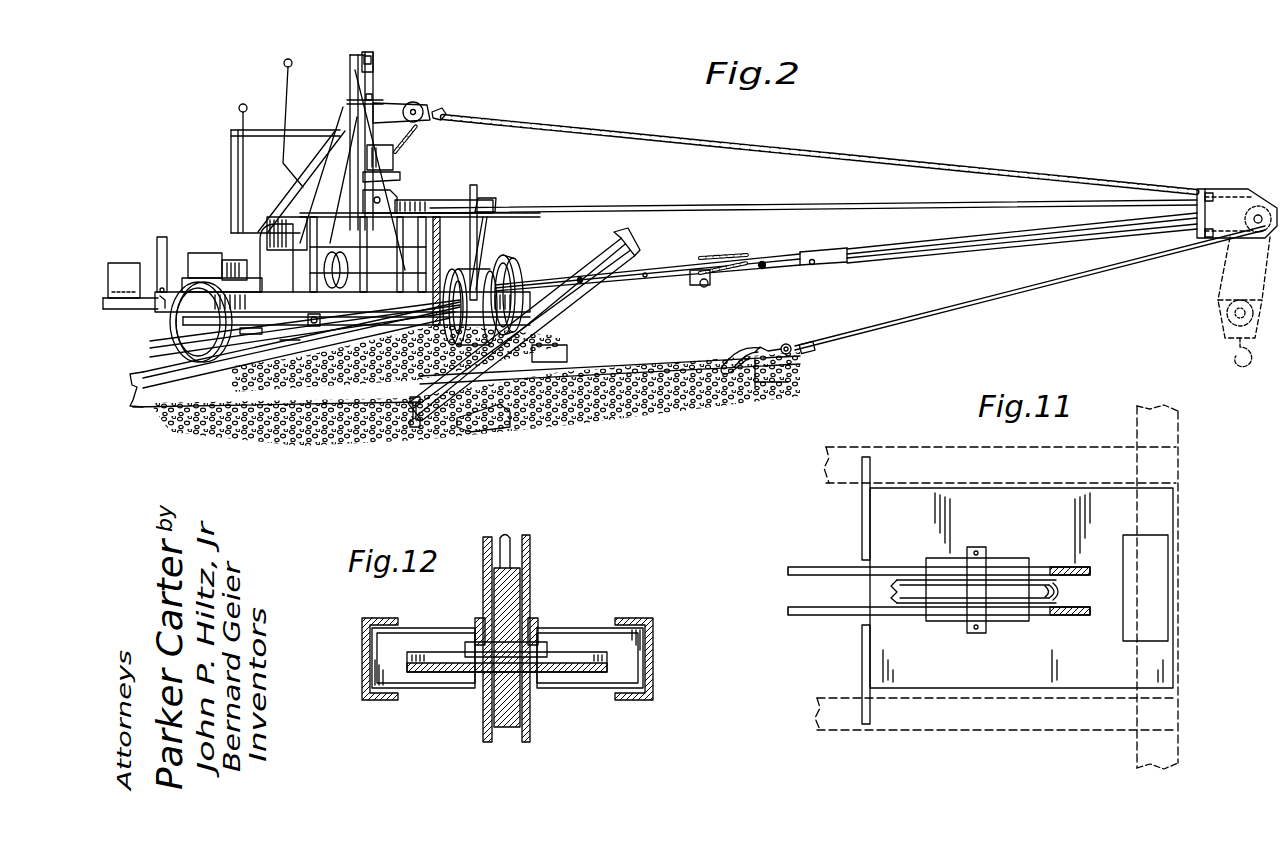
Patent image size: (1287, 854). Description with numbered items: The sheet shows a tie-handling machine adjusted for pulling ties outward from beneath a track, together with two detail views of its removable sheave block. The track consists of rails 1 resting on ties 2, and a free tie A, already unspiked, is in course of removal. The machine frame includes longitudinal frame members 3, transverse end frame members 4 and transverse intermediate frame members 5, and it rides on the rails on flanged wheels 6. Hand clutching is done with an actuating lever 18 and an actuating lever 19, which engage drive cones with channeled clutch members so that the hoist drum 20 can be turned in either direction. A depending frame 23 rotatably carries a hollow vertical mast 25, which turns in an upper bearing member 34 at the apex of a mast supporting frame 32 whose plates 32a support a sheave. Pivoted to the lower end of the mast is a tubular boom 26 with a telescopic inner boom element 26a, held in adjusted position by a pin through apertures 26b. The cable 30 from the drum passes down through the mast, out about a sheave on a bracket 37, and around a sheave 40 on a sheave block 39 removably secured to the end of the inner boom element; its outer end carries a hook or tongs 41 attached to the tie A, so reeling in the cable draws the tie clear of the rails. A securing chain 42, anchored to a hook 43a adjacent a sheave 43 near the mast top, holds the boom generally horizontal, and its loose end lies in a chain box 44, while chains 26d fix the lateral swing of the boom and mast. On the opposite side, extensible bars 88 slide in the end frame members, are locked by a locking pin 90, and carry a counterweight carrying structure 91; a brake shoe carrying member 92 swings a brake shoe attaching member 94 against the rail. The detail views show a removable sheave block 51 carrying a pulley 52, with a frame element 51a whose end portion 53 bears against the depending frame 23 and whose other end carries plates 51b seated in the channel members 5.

In FIG. 2, the rails 1 is at (132, 376).
In FIG. 2, the ties 2 is at (170, 412).
In FIG. 2, the longitudinal frame members 3 is at (445, 290).
In FIG. 2, the transverse end frame members 4 is at (265, 298).
In FIG. 12, the transverse intermediate frame members 5 is at (360, 652).
In FIG. 11, the transverse intermediate frame members 5 is at (899, 447).
In FIG. 2, the flanged wheels 6 is at (170, 345).
In FIG. 2, the actuating lever 18 is at (284, 86).
In FIG. 2, the actuating lever 19 is at (240, 117).
In FIG. 2, the hoist drum 20 is at (314, 314).
In FIG. 11, the depending frame 23 is at (1180, 430).
In FIG. 2, the hollow vertical mast 25 is at (385, 180).
In FIG. 2, the tubular boom 26 is at (830, 268).
In FIG. 2, the telescopic auxiliary inner boom element 26a is at (940, 244).
In FIG. 2, the apertures 26b is at (812, 258).
In FIG. 2, the chains (tension elements) 26d is at (710, 258).
In FIG. 2, the cable 30 is at (742, 206).
In FIG. 12, the cable 30 is at (506, 534).
In FIG. 2, the mast supporting frame 32 is at (318, 150).
In FIG. 2, the plates 32a is at (368, 52).
In FIG. 2, the upper bearing member 34 is at (372, 99).
In FIG. 2, the bracket 37 is at (395, 200).
In FIG. 2, the sheave block 39 is at (1225, 188).
In FIG. 2, the sheave 40 is at (1262, 203).
In FIG. 2, the hook or tongs 41 is at (762, 374).
In FIG. 2, the securing chain 42 is at (582, 130).
In FIG. 2, the sheave 43 is at (411, 101).
In FIG. 2, the hook 43a is at (440, 108).
In FIG. 2, the chain box 44 is at (394, 157).
In FIG. 12, the removable sheave block 51 is at (530, 552).
In FIG. 11, the removable sheave block 51 is at (788, 578).
In FIG. 12, the frame element 51a is at (447, 673).
In FIG. 11, the frame element 51a is at (1125, 518).
In FIG. 12, the longitudinally extending plates 51b is at (420, 636).
In FIG. 11, the longitudinally extending plates 51b is at (862, 486).
In FIG. 12, the pulley 52 is at (520, 586).
In FIG. 11, the pulley 52 is at (897, 591).
In FIG. 11, the end portion 53 is at (1168, 576).
In FIG. 2, the extensible bars 88 is at (122, 309).
In FIG. 2, the locking pin 90 is at (163, 310).
In FIG. 2, the counterweight carrying structure 91 is at (120, 263).
In FIG. 2, the brake shoe carrying member 92 is at (288, 342).
In FIG. 2, the brake shoe attaching member 94 is at (262, 330).
In FIG. 2, the free tie A is at (690, 367).